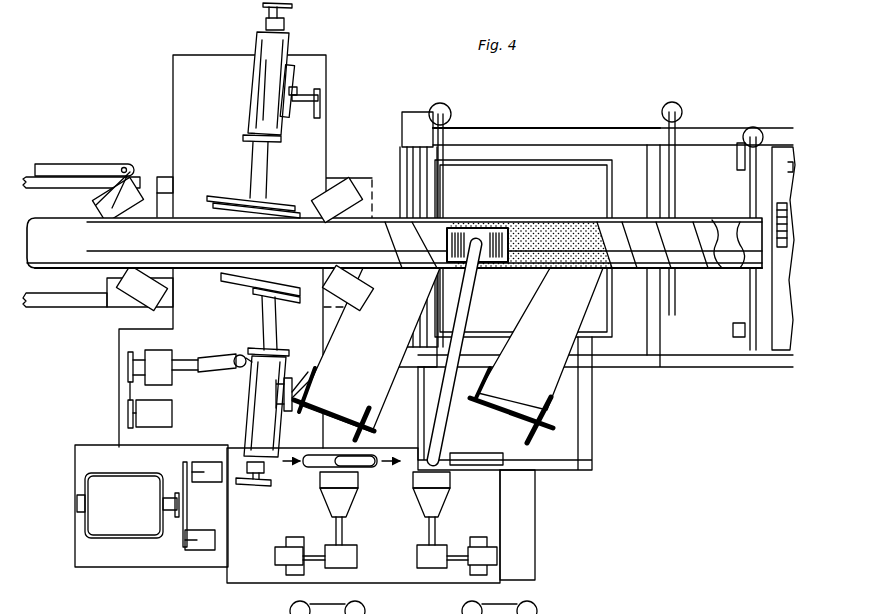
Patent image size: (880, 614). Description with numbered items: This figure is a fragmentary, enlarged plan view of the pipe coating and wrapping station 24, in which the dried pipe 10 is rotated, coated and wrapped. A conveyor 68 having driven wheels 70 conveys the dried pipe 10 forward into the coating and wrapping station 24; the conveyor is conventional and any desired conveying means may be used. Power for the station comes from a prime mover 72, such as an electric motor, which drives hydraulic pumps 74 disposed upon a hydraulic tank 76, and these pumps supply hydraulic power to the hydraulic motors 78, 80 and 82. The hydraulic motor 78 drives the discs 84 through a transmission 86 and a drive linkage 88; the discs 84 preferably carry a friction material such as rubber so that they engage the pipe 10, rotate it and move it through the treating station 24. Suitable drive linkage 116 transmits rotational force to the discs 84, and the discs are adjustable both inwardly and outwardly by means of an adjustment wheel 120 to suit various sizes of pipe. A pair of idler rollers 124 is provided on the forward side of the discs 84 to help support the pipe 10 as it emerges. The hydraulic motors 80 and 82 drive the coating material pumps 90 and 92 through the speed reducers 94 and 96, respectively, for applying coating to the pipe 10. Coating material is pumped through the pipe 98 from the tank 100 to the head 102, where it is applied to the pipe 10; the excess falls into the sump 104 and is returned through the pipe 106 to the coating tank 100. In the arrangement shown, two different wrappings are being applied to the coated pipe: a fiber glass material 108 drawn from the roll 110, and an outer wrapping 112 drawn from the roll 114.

The pipe 10 is at (80, 247).
The pipe coating and wrapping station 24 is at (357, 140).
The conveyor 68 is at (63, 165).
The driven wheels 70 is at (112, 278).
The prime mover 72 is at (133, 505).
The hydraulic pumps 74 is at (205, 483).
The hydraulic tank 76 is at (118, 556).
The hydraulic motor 78 is at (172, 412).
The hydraulic motor 80 is at (276, 552).
The hydraulic motor 82 is at (500, 558).
The discs 84 is at (245, 290).
The transmission 86 is at (178, 352).
The drive linkage 88 is at (222, 357).
The coating material pump 90 is at (355, 479).
The coating material pump 92 is at (452, 480).
The speed reducer 94 is at (358, 556).
The speed reducer 96 is at (418, 557).
The pipe 98 is at (428, 413).
The tank 100 is at (420, 523).
The head 102 is at (500, 228).
The sump 104 is at (481, 191).
The pipe 106 is at (597, 403).
The fiber glass material 108 is at (362, 372).
The roll 110 is at (352, 425).
The outer wrapping 112 is at (548, 378).
The roll 114 is at (538, 425).
The drive linkage 116 is at (273, 186).
The adjustment wheel 120 is at (292, 6).
The idler rollers 124 is at (340, 224).